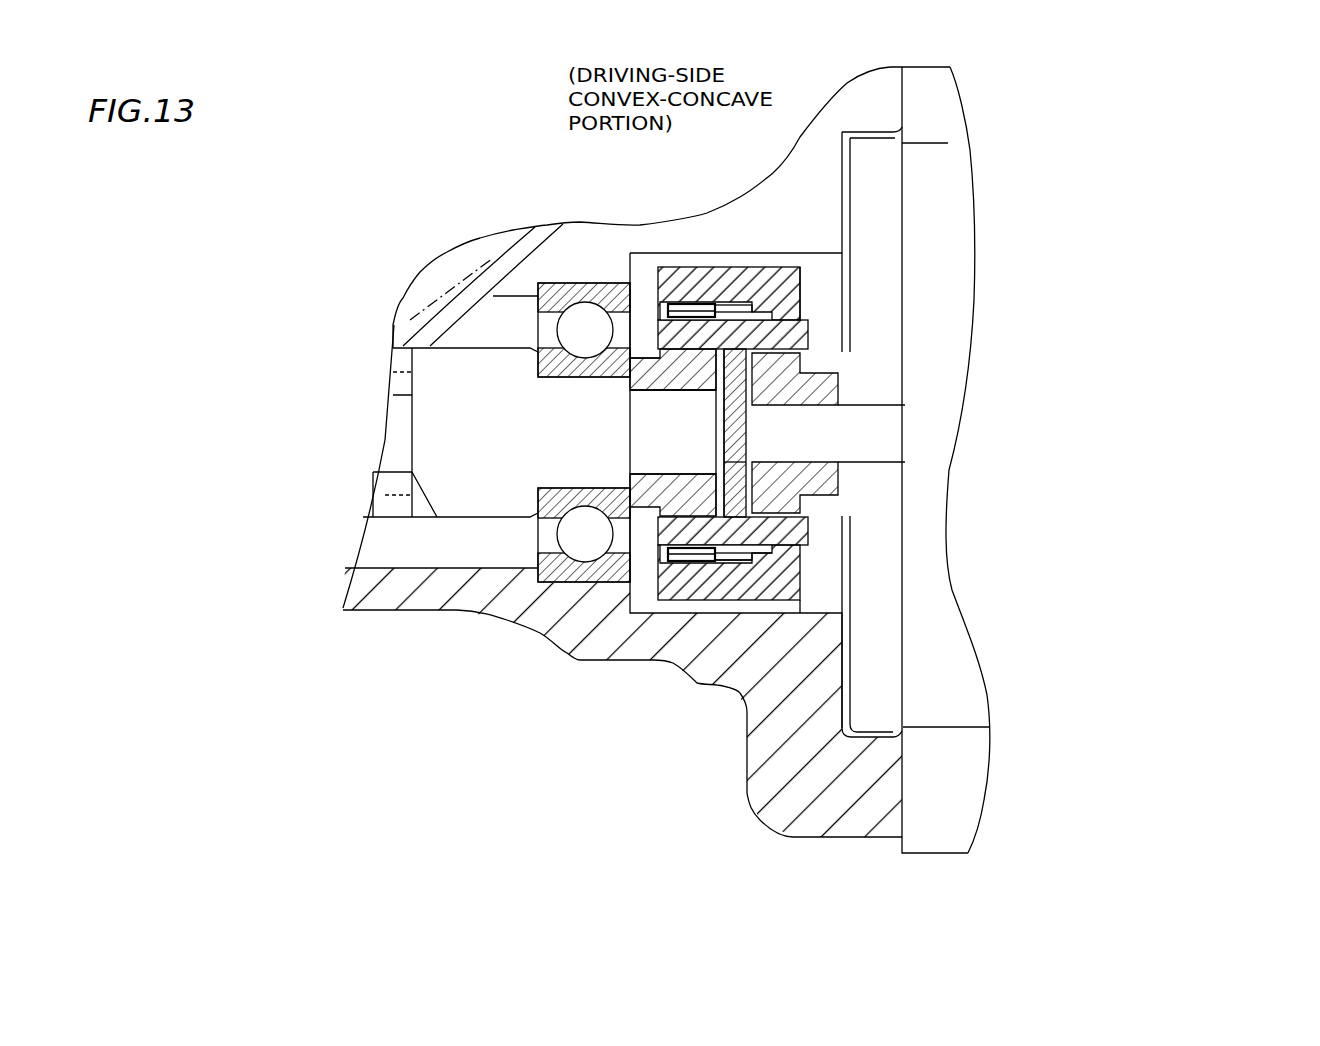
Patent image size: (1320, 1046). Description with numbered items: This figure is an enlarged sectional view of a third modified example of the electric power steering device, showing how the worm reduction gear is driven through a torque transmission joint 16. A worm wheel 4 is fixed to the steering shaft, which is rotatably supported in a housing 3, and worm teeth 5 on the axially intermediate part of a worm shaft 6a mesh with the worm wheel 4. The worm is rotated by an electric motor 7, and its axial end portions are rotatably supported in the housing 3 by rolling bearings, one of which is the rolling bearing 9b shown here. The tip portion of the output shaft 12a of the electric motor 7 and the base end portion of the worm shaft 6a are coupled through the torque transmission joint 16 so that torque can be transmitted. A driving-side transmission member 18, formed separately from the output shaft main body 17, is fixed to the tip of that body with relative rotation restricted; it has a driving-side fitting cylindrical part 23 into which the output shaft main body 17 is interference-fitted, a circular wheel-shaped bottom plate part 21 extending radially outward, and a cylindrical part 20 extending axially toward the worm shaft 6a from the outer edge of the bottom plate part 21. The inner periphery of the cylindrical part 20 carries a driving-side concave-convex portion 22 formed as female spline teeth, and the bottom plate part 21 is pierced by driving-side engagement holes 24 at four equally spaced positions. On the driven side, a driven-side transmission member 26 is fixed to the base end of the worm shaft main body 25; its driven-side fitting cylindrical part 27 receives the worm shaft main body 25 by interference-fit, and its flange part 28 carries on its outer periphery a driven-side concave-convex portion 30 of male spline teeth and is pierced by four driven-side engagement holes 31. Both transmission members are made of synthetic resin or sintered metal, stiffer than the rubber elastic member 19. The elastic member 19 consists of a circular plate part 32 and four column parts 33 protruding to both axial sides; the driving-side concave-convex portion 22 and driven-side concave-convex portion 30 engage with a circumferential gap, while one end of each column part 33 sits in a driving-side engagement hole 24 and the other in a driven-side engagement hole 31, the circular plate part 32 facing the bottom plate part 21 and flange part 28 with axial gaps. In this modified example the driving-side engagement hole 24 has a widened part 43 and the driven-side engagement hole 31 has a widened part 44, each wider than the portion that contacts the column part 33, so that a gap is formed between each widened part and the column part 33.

The housing 3 is at (363, 604).
The worm wheel 4 is at (405, 322).
The worm teeth 5 is at (350, 548).
The worm shaft 6a is at (447, 493).
The electric motor 7 is at (945, 187).
The rolling bearing 9b is at (560, 587).
The output shaft 12a is at (877, 445).
The torque transmission joint 16 is at (815, 592).
The output shaft main body 17 is at (870, 422).
The driving-side transmission member 18 is at (783, 285).
The elastic member 19 is at (385, 495).
The cylindrical part 20 is at (705, 290).
The bottom plate part 21 is at (783, 302).
The driving-side concave-convex portion 22 is at (668, 302).
The driving-side fitting cylindrical part 23 is at (812, 390).
The driving-side engagement hole 24 is at (808, 337).
The worm shaft main body 25 is at (724, 440).
The driven-side transmission member 26 is at (643, 375).
The driven-side fitting cylindrical part 27 is at (647, 359).
The flange part 28 is at (700, 575).
The driven-side concave-convex portion 30 is at (672, 583).
The driven-side engagement hole 31 is at (663, 320).
The circular plate part 32 is at (735, 464).
The column part 33 is at (733, 352).
The widened part 43 is at (762, 590).
The widened part 44 is at (714, 585).